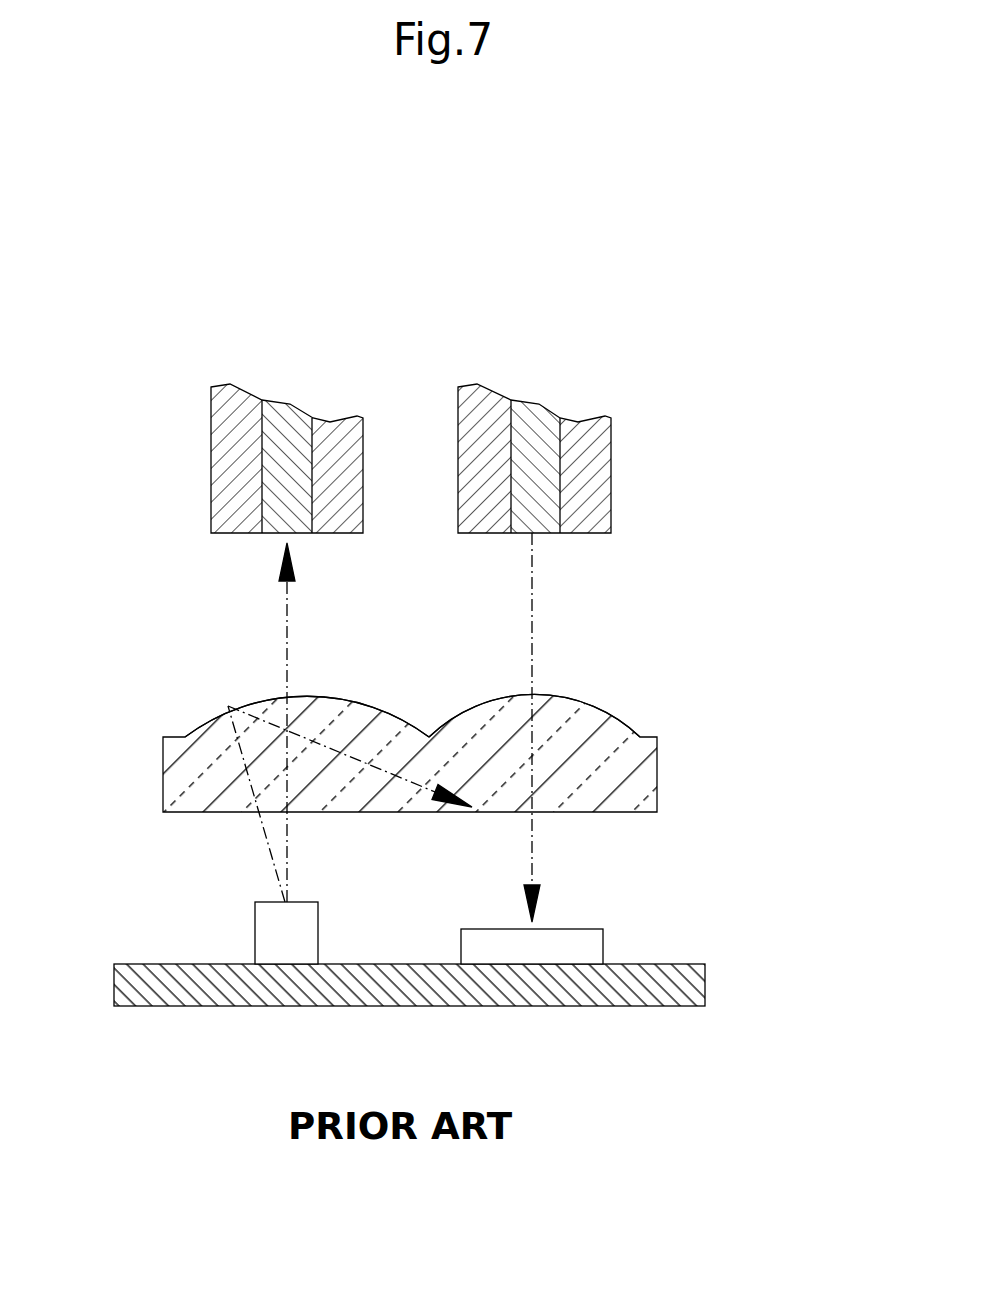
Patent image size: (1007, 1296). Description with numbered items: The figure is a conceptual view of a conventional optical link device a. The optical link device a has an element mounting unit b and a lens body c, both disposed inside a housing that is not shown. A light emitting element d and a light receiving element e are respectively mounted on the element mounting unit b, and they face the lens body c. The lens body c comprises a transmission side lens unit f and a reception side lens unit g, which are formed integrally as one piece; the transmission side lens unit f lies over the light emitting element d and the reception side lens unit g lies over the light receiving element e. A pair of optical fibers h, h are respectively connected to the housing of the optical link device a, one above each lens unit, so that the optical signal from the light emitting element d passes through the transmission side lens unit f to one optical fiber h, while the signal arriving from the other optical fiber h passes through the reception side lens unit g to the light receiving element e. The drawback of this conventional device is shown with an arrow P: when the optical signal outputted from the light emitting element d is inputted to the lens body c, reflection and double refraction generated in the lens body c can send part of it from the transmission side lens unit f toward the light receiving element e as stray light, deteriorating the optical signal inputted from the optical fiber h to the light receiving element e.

The optical link device a is at (716, 390).
The element mounting unit b is at (655, 992).
The lens body c is at (643, 778).
The light emitting element d is at (268, 932).
The light receiving element e is at (567, 938).
The transmission side lens unit f is at (206, 712).
The reception side lens unit g is at (568, 696).
The optical fiber h is at (287, 421).
The arrow P is at (345, 698).